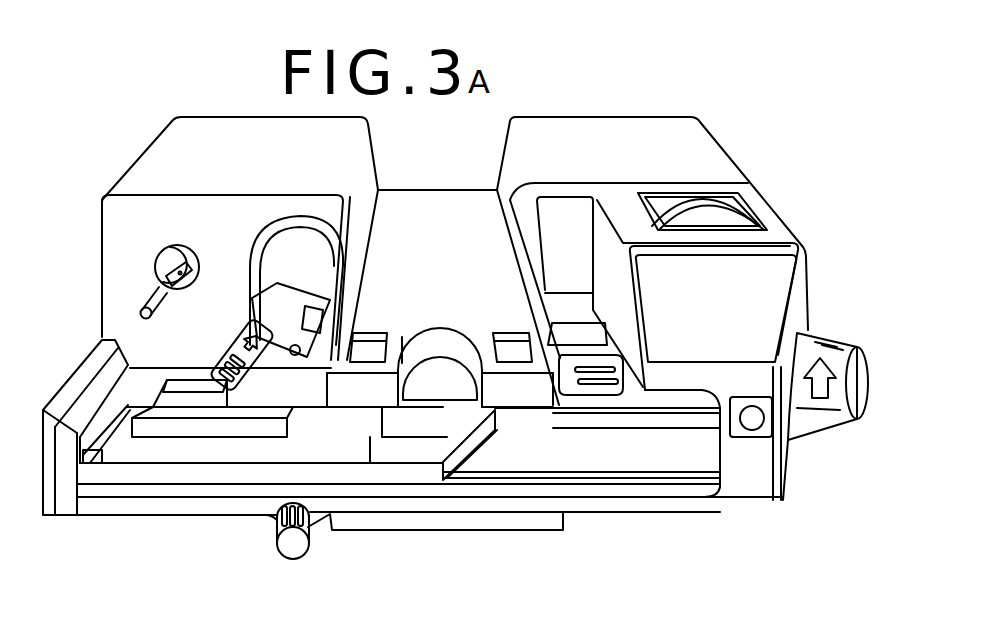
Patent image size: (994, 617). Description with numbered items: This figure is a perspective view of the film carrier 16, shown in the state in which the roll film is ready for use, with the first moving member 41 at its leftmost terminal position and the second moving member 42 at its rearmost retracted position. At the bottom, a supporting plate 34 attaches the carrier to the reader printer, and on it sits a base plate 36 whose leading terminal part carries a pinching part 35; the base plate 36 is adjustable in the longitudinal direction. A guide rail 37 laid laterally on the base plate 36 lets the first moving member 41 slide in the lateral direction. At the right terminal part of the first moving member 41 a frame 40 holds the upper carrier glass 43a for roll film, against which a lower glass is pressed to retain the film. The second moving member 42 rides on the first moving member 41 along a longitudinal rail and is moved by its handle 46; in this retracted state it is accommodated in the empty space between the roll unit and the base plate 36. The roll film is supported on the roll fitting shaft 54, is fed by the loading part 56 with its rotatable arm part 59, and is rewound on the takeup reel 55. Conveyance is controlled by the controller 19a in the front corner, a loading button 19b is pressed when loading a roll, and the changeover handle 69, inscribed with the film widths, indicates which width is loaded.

The film carrier 16 is at (618, 103).
The controller 19a is at (857, 347).
The loading button 19b is at (760, 425).
The supporting plate 34 is at (462, 525).
The pinching part 35 is at (292, 550).
The base plate 36 is at (646, 470).
The guide rail 37 is at (672, 413).
The frame for a glass plate 40 is at (447, 420).
The first moving member 41 is at (155, 455).
The second moving member 42 is at (130, 382).
The upper carrier glass for a roll film 43a is at (437, 370).
The handle 46 is at (213, 413).
The roll fitting shaft 54 is at (140, 308).
The takeup reel 55 is at (697, 223).
The loading part 56 is at (219, 335).
The arm part 59 is at (243, 305).
The changeover handle 69 is at (587, 363).